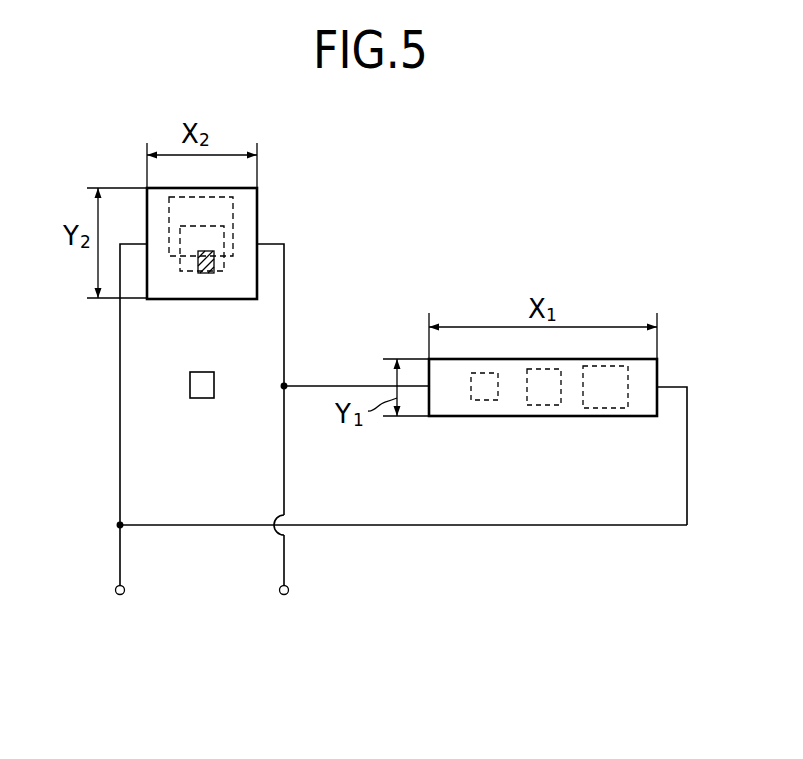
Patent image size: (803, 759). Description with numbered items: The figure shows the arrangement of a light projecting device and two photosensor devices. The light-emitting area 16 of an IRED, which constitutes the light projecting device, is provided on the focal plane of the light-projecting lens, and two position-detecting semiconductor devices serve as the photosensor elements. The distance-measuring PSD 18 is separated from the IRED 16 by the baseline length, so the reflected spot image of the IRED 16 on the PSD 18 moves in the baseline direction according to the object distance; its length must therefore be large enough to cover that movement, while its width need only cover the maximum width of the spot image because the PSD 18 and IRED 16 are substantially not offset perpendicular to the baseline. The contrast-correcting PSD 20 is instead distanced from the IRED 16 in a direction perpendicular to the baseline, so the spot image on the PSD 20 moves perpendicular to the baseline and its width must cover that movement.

The light-emitting area 16 is at (190, 383).
The distance-measuring PSD 18 is at (457, 417).
The contrast-correcting PSD 20 is at (252, 218).